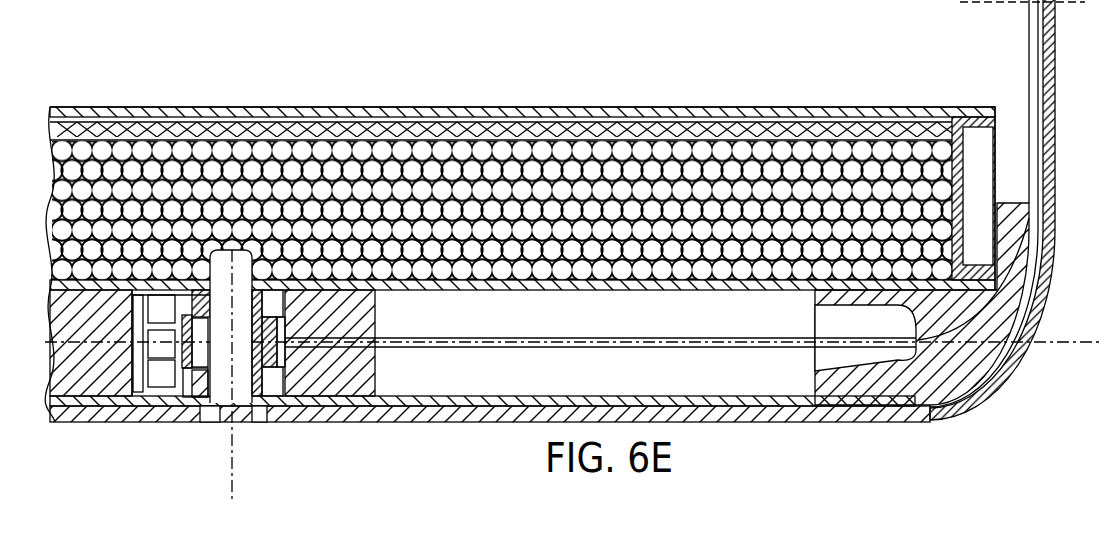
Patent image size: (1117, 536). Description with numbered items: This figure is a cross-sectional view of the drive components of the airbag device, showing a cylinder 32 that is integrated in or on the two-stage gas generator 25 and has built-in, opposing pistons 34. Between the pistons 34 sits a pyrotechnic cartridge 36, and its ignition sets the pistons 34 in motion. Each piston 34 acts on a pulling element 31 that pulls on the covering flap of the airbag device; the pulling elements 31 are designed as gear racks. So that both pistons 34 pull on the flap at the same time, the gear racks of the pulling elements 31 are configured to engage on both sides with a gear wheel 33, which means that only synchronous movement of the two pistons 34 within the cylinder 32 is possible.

The two-stage gas generator 25 is at (837, 128).
The pulling element 31 is at (1033, 106).
The cylinder 32 is at (342, 377).
The gear wheel 33 is at (262, 360).
The piston 34 is at (145, 373).
The pyrotechnic cartridge 36 is at (232, 373).